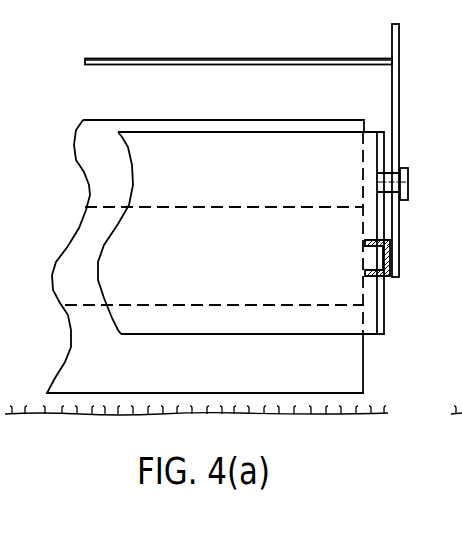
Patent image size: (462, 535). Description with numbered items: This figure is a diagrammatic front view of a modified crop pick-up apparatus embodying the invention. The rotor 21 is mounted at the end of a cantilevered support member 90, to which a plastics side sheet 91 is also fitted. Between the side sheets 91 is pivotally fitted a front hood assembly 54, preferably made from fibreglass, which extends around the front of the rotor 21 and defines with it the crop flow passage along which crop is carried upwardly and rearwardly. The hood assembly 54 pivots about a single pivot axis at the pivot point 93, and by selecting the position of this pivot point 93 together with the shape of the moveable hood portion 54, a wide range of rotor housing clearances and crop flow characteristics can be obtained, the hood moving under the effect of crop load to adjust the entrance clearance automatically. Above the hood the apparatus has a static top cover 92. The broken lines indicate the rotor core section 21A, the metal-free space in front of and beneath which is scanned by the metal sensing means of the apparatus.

The rotor 21 is at (363, 367).
The rotor core section 21A is at (231, 293).
The front hood assembly 54 is at (227, 132).
The cantilevered support member 90 is at (387, 278).
The plastics side sheet 91 is at (402, 100).
The static top cover 92 is at (172, 58).
The pivot point 93 is at (409, 187).